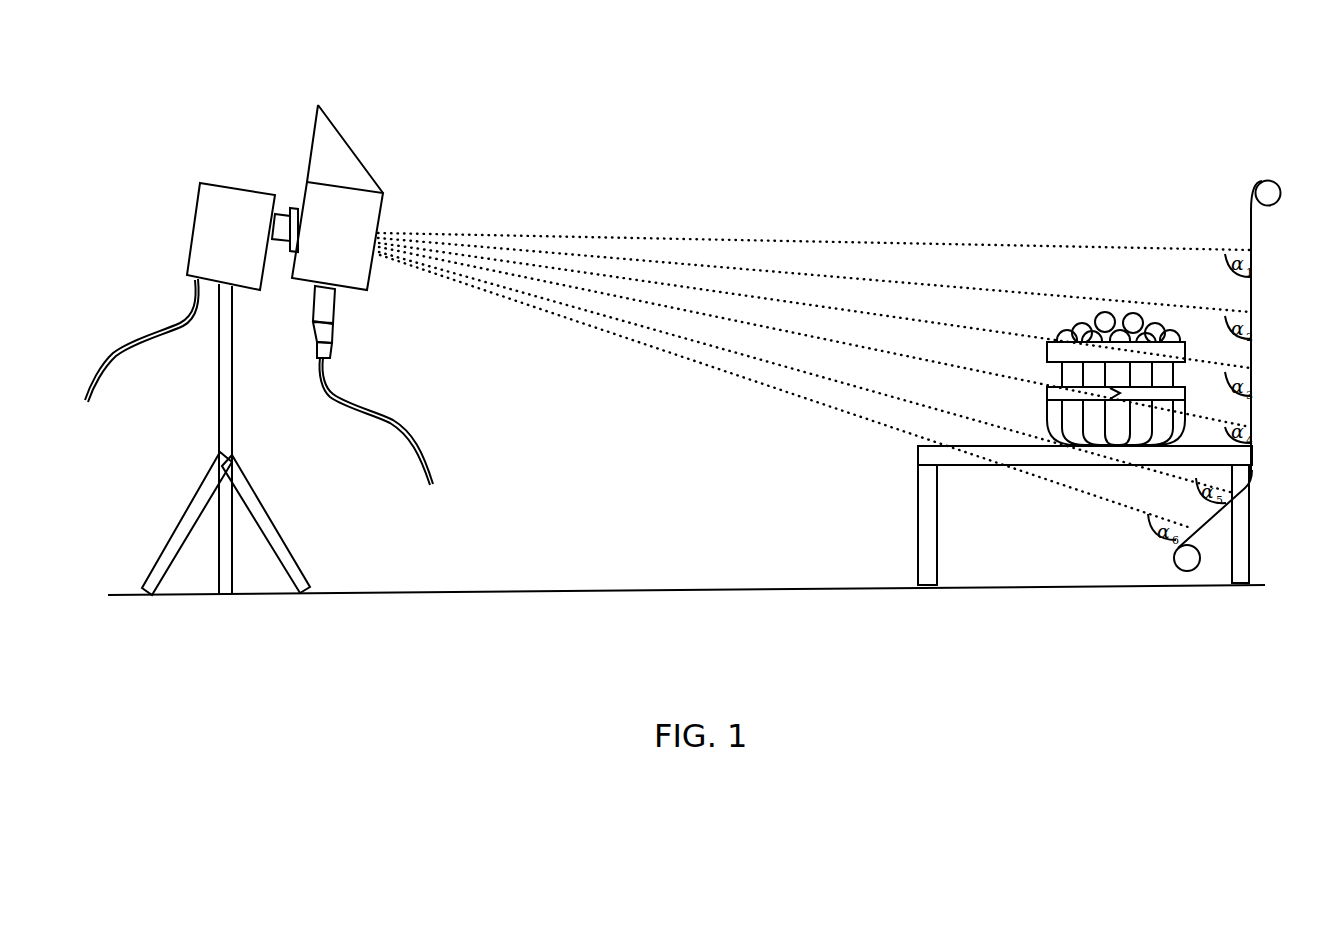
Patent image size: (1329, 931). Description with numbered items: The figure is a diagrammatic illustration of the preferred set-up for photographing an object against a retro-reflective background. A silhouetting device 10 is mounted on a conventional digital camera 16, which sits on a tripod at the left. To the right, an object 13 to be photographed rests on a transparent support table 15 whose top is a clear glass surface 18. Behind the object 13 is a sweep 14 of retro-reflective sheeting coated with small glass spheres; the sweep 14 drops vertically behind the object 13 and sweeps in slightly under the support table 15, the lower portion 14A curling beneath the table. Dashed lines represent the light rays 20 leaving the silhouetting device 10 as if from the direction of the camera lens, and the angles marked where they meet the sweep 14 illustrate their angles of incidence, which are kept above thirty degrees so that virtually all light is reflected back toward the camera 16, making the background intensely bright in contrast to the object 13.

The silhouetting device 10 is at (378, 145).
The object 13 is at (1160, 353).
The sweep 14 is at (1251, 308).
The lower support rod 14A is at (1202, 522).
The support table 15 is at (957, 458).
The digital camera 16 is at (207, 218).
The clear glass surface 18 is at (1025, 444).
The light rays 20 is at (693, 238).